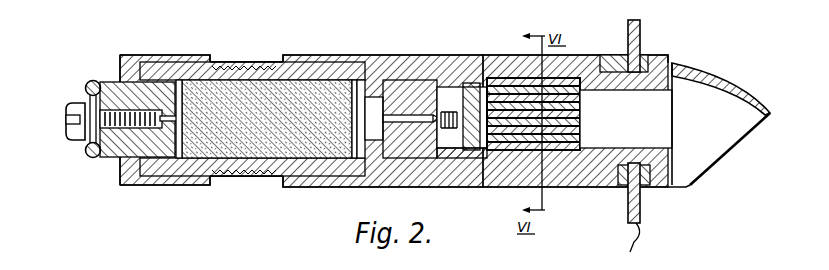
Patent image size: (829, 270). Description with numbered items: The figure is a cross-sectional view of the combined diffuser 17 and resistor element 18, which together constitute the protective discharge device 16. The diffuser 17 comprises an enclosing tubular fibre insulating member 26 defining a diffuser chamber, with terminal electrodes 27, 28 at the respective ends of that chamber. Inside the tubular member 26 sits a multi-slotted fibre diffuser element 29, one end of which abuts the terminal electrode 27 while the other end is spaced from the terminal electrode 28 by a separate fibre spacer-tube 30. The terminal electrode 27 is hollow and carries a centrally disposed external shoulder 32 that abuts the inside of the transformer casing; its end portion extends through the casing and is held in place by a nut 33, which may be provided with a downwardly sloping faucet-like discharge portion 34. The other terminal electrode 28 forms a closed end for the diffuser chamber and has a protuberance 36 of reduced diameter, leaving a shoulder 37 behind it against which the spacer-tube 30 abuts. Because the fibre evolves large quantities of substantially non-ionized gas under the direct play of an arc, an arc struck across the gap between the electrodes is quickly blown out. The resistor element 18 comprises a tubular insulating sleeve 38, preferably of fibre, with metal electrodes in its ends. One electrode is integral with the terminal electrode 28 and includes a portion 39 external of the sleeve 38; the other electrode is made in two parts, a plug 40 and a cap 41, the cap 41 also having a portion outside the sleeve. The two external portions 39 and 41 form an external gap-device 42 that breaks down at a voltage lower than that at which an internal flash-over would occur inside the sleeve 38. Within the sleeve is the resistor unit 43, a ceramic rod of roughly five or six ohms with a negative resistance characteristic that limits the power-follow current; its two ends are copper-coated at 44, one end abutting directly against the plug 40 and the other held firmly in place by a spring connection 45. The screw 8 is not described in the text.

The adjusting screw 8 is at (93, 160).
The protective discharge device 16 is at (424, 33).
The diffuser 17 is at (557, 150).
The resistor element 18 is at (240, 163).
The enclosing tubular fibre insulating member 26 is at (567, 56).
The terminal electrode 27 is at (598, 58).
The terminal electrode 28 is at (425, 70).
The multi-slotted fibre diffuser element 29 is at (520, 157).
The fibre spacer-tube 30 is at (472, 160).
The external shoulder 32 is at (630, 186).
The nut 33 is at (660, 187).
The faucet-like discharge portion 34 is at (738, 142).
The protuberance 36 is at (470, 86).
The shoulder 37 is at (462, 80).
The tubular insulating sleeve 38 is at (262, 177).
The external portion 39 is at (350, 56).
The plug 40 is at (138, 160).
The cap 41 is at (153, 55).
The external gap-device 42 is at (283, 60).
The resistor unit 43 is at (267, 119).
The copper-coated ends 44 is at (157, 160).
The spring connection 45 is at (382, 143).